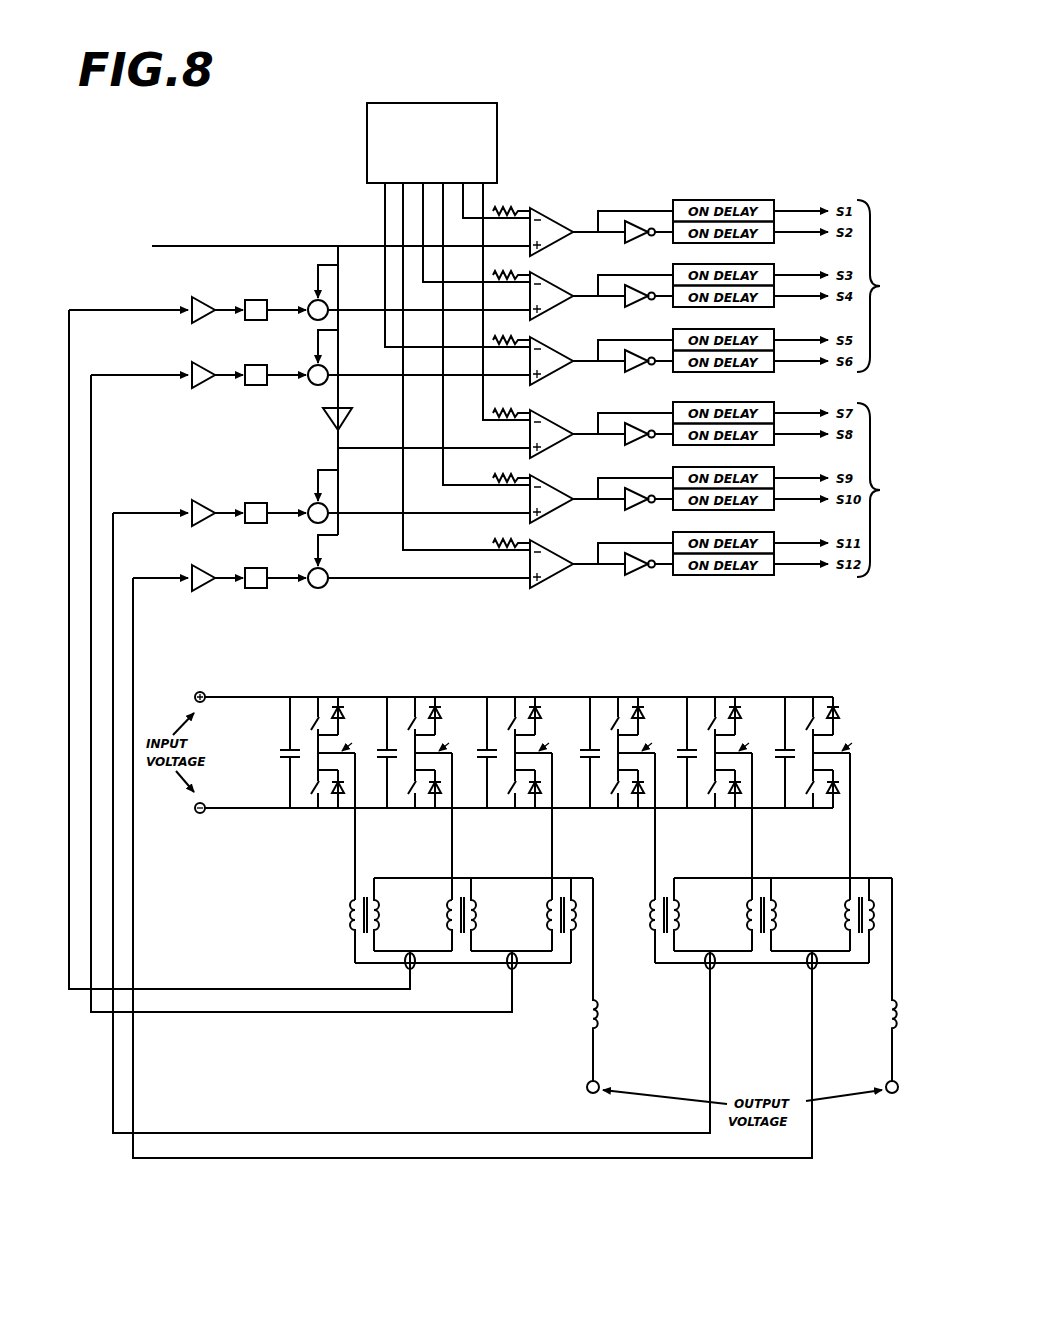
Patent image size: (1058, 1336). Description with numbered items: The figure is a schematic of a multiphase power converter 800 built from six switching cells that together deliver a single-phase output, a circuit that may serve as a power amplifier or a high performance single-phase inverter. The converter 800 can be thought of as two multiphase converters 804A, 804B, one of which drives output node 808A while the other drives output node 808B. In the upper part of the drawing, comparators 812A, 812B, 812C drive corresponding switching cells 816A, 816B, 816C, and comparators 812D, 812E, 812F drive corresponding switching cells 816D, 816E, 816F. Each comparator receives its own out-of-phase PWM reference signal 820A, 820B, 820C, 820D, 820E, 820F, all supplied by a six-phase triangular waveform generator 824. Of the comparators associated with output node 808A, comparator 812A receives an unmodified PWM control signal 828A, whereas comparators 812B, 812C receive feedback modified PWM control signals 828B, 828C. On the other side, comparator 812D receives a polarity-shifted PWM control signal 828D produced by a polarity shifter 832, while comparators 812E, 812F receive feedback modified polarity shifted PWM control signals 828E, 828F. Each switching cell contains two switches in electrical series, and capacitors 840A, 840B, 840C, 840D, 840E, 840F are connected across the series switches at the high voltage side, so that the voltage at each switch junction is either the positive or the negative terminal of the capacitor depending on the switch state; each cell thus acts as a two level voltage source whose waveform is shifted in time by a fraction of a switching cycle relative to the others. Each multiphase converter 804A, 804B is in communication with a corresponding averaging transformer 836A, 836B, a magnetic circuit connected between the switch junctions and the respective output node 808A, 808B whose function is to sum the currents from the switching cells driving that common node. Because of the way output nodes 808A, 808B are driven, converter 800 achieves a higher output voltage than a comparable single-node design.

The multiphase power converter 800 is at (718, 146).
The multiphase converter 804A is at (520, 688).
The multiphase converter 804B is at (691, 688).
The output node 808A is at (586, 1089).
The output node 808B is at (892, 1094).
The comparator 812A is at (556, 211).
The comparator 812B is at (567, 277).
The comparator 812C is at (567, 342).
The comparator 812D is at (567, 413).
The comparator 812E is at (567, 480).
The comparator 812F is at (567, 546).
The switching cell 816A is at (333, 692).
The switching cell 816B is at (433, 692).
The switching cell 816C is at (522, 692).
The switching cell 816D is at (627, 692).
The switching cell 816E is at (722, 692).
The switching cell 816F is at (820, 692).
The out-of-phase PWM reference signal 820A is at (505, 206).
The out-of-phase PWM reference signal 820B is at (493, 275).
The out-of-phase PWM reference signal 820C is at (493, 340).
The out-of-phase PWM reference signal 820D is at (493, 412).
The out-of-phase PWM reference signal 820E is at (493, 476).
The out-of-phase PWM reference signal 820F is at (493, 543).
The six-phase triangular waveform generator 824 is at (482, 103).
The unmodified PWM control signal 828A is at (232, 228).
The feedback modified PWM control signal 828B is at (372, 297).
The feedback modified PWM control signal 828C is at (372, 362).
The polarity-shifted PWM control signal 828D is at (372, 437).
The feedback modified polarity shifted PWM control signal 828E is at (372, 502).
The feedback modified polarity shifted PWM control signal 828F is at (372, 567).
The polarity shifter 832 is at (322, 416).
The averaging transformer 836A is at (538, 978).
The averaging transformer 836B is at (774, 978).
The capacitor 840A is at (284, 757).
The capacitor 840B is at (380, 760).
The capacitor 840C is at (482, 762).
The capacitor 840D is at (585, 762).
The capacitor 840E is at (682, 762).
The capacitor 840F is at (780, 762).